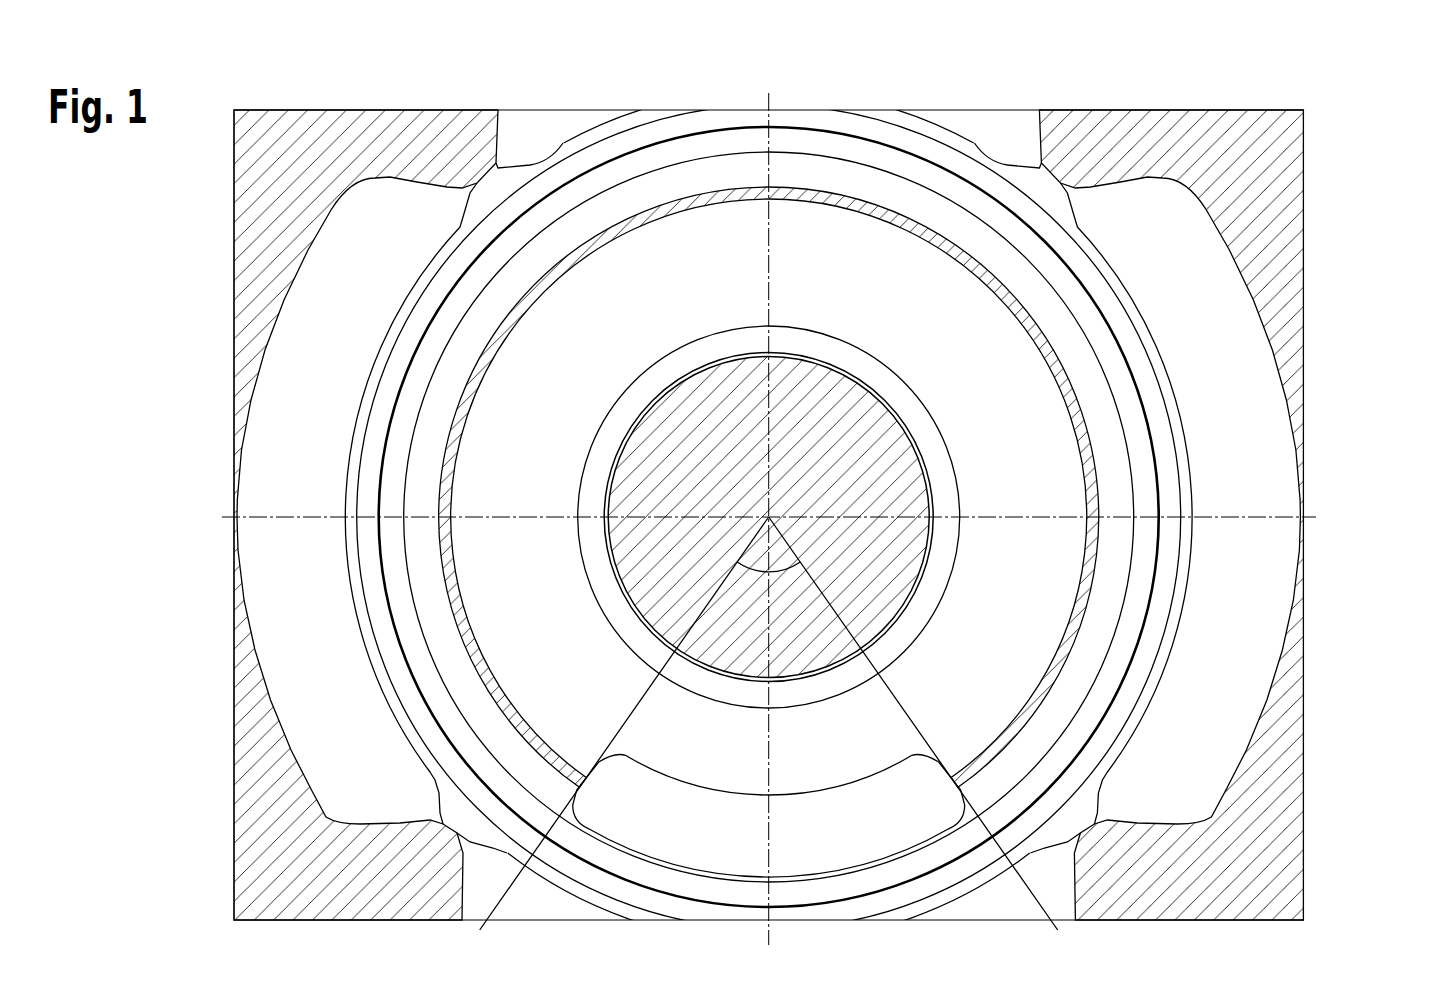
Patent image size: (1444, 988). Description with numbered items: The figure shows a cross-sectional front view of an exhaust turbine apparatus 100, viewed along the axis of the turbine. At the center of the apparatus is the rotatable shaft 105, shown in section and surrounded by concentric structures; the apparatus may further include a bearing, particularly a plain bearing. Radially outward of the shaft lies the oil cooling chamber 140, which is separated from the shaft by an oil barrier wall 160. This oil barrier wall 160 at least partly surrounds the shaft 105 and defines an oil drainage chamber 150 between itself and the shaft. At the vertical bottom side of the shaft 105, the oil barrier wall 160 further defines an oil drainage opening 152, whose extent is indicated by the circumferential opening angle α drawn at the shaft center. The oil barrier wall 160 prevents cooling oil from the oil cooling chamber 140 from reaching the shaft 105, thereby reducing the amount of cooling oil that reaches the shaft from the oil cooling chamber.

The exhaust turbine apparatus 100 is at (821, 483).
The rotatable shaft 105 is at (768, 351).
The oil cooling chamber 140 is at (899, 517).
The oil drainage chamber 150 is at (950, 628).
The oil drainage opening 152 is at (968, 811).
The oil barrier wall 160 is at (912, 487).